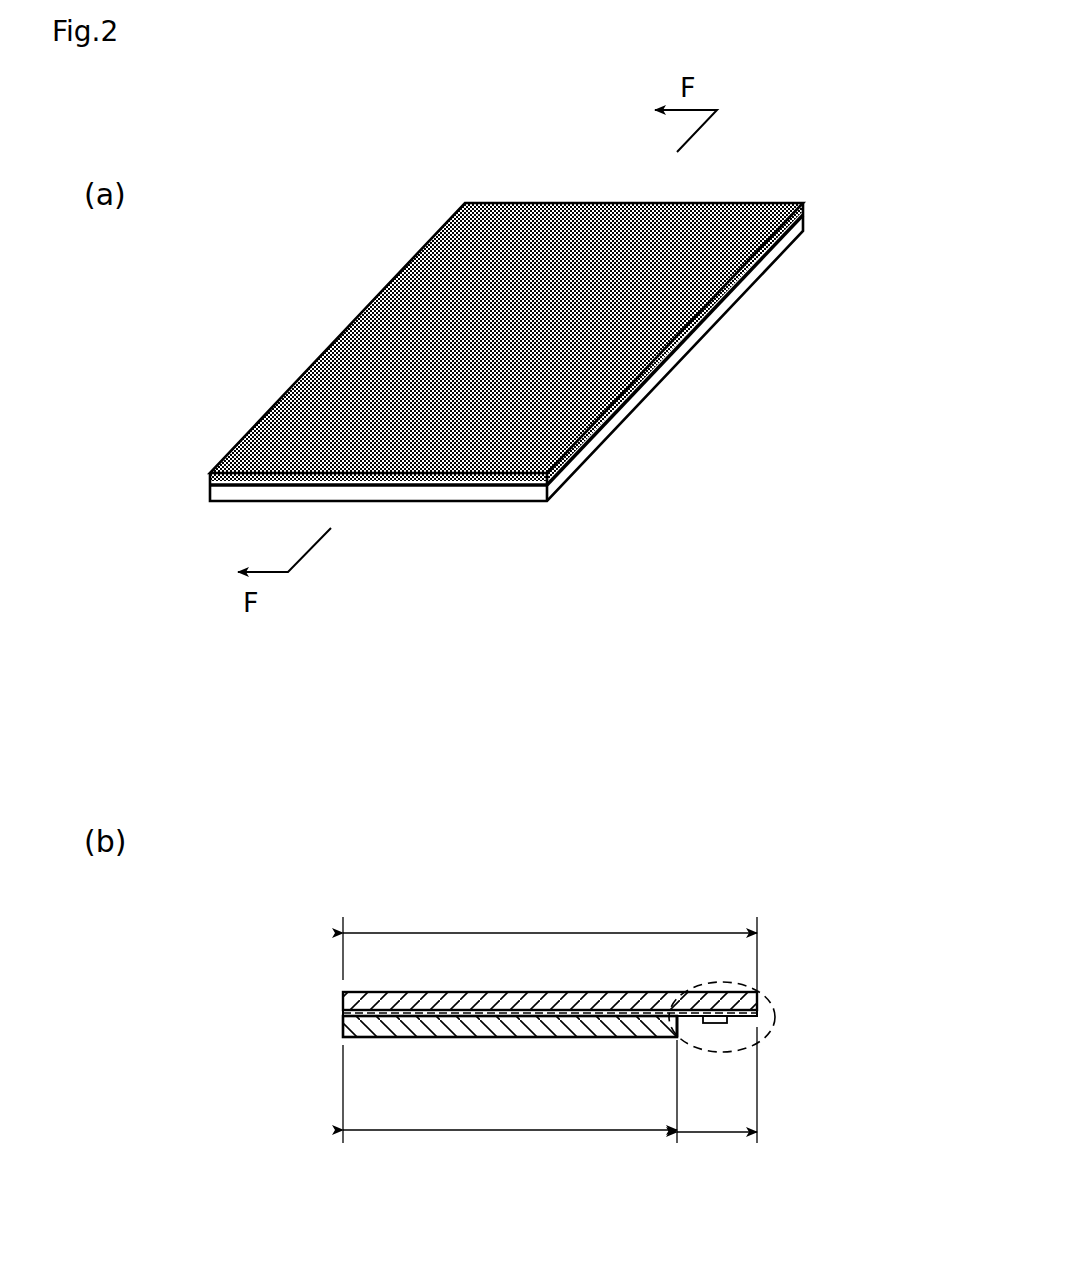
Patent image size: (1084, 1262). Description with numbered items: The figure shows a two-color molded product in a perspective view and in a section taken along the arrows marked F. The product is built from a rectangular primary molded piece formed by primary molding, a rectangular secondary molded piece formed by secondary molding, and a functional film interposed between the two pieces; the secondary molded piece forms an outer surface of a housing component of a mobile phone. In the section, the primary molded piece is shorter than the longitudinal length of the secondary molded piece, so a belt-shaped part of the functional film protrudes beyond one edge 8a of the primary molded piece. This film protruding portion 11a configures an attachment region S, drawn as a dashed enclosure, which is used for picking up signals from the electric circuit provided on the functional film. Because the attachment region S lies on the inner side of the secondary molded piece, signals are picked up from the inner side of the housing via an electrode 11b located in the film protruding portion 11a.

The edge of the primary molded piece 8a is at (686, 1031).
The film protruding portion 11a is at (740, 1023).
The electrode 11b is at (718, 1025).
The attachment region S is at (775, 995).